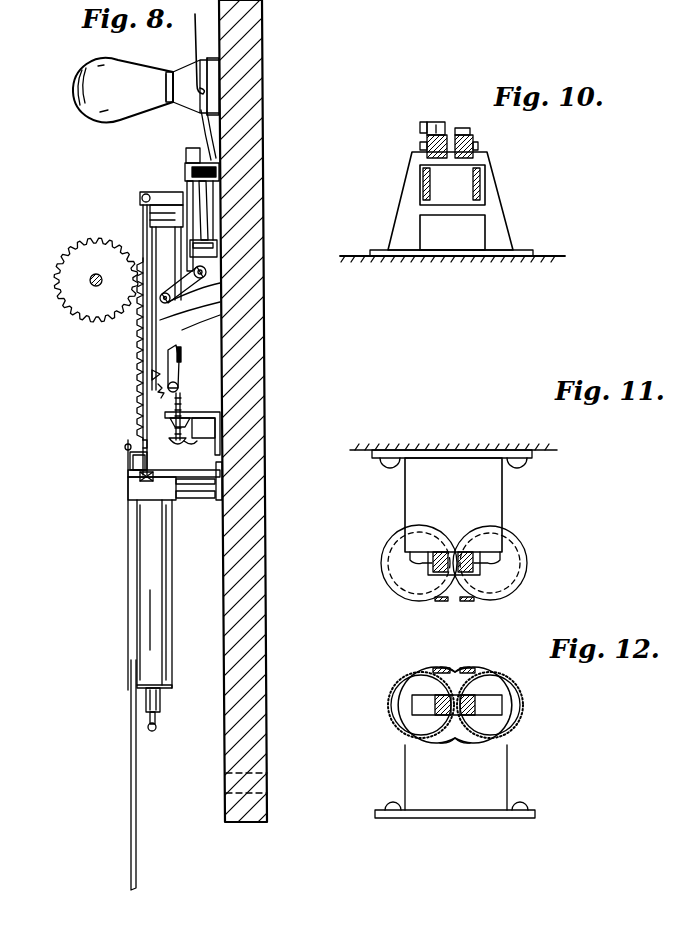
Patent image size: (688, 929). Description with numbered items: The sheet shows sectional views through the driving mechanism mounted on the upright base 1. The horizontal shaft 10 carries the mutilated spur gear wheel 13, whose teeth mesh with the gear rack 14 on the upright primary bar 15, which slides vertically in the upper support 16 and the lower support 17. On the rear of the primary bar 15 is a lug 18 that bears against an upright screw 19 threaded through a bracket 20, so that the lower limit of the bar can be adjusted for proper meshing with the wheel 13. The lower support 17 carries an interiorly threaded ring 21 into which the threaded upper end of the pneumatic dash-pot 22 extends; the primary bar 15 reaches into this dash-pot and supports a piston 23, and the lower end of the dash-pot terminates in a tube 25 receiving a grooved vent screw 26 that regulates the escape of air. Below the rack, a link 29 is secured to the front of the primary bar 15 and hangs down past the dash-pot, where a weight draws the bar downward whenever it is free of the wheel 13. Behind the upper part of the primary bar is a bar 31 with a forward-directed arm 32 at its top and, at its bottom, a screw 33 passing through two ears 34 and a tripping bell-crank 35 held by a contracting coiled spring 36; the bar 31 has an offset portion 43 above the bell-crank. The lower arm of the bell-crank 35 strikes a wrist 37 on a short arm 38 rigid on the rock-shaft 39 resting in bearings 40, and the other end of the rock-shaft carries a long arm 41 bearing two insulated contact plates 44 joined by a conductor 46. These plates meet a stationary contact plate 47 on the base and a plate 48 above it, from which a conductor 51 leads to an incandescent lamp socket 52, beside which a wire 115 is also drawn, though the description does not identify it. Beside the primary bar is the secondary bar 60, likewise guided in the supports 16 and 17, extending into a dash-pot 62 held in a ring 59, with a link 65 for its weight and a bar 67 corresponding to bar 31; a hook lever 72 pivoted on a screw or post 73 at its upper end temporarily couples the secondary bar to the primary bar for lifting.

In FIG. 10, the upright base 1 is at (508, 258).
In FIG. 8, the horizontal shaft 10 is at (90, 285).
In FIG. 8, the mutilated spur gear wheel 13 is at (94, 304).
In FIG. 8, the gear rack 14 is at (137, 345).
In FIG. 10, the gear rack 14 is at (470, 131).
In FIG. 8, the primary bar 15 is at (147, 438).
In FIG. 10, the primary bar 15 is at (478, 146).
In FIG. 11, the primary bar 15 is at (472, 558).
In FIG. 12, the primary bar 15 is at (476, 700).
In FIG. 8, the upper support 16 is at (153, 213).
In FIG. 10, the upper support 16 is at (488, 175).
In FIG. 8, the lower support 17 is at (140, 480).
In FIG. 11, the lower support 17 is at (488, 504).
In FIG. 12, the lower support 17 is at (504, 772).
In FIG. 8, the lug 18 is at (152, 376).
In FIG. 8, the upright screw 19 is at (189, 430).
In FIG. 8, the bracket 20 is at (210, 428).
In FIG. 8, the screw-threaded ring 21 is at (130, 492).
In FIG. 11, the screw-threaded ring 21 is at (512, 582).
In FIG. 8, the pneumatic dash-pot 22 is at (137, 524).
In FIG. 12, the piston 23 is at (528, 718).
In FIG. 8, the tube 25 is at (160, 698).
In FIG. 8, the screw 26 is at (158, 720).
In FIG. 8, the link 29 is at (130, 473).
In FIG. 11, the link 29 is at (468, 602).
In FIG. 12, the link 29 is at (468, 668).
In FIG. 8, the bar 31 is at (218, 330).
In FIG. 10, the bar 31 is at (480, 187).
In FIG. 8, the forward-directed arm 32 is at (160, 195).
In FIG. 8, the screw 33 is at (178, 389).
In FIG. 8, the ears 34 is at (179, 379).
In FIG. 8, the bell-crank 35 is at (181, 356).
In FIG. 8, the contracting coiled spring 36 is at (158, 388).
In FIG. 8, the wrist 37 is at (160, 320).
In FIG. 8, the short arm 38 is at (218, 307).
In FIG. 8, the rock-shaft 39 is at (206, 272).
In FIG. 8, the bearings 40 is at (215, 291).
In FIG. 8, the long arm 41 is at (208, 204).
In FIG. 8, the offset portion 43 is at (182, 318).
In FIG. 8, the metallic contact plates 44 is at (186, 165).
In FIG. 8, the conductor 46 is at (198, 200).
In FIG. 8, the stationary contact plate 47 is at (213, 246).
In FIG. 8, the contact plate 48 is at (222, 163).
In FIG. 8, the conductor 51 is at (213, 140).
In FIG. 8, the incandescent lamp socket 52 is at (212, 75).
In FIG. 11, the ring 59 is at (412, 588).
In FIG. 10, the secondary bar 60 is at (427, 145).
In FIG. 11, the secondary bar 60 is at (432, 556).
In FIG. 12, the secondary bar 60 is at (437, 700).
In FIG. 12, the dash-pot 62 is at (388, 705).
In FIG. 11, the link 65 is at (443, 602).
In FIG. 12, the link 65 is at (444, 668).
In FIG. 10, the bar 67 is at (423, 187).
In FIG. 10, the hook lever 72 is at (425, 120).
In FIG. 10, the screw or post 73 is at (440, 122).
In FIG. 8, the wire 115 is at (196, 45).